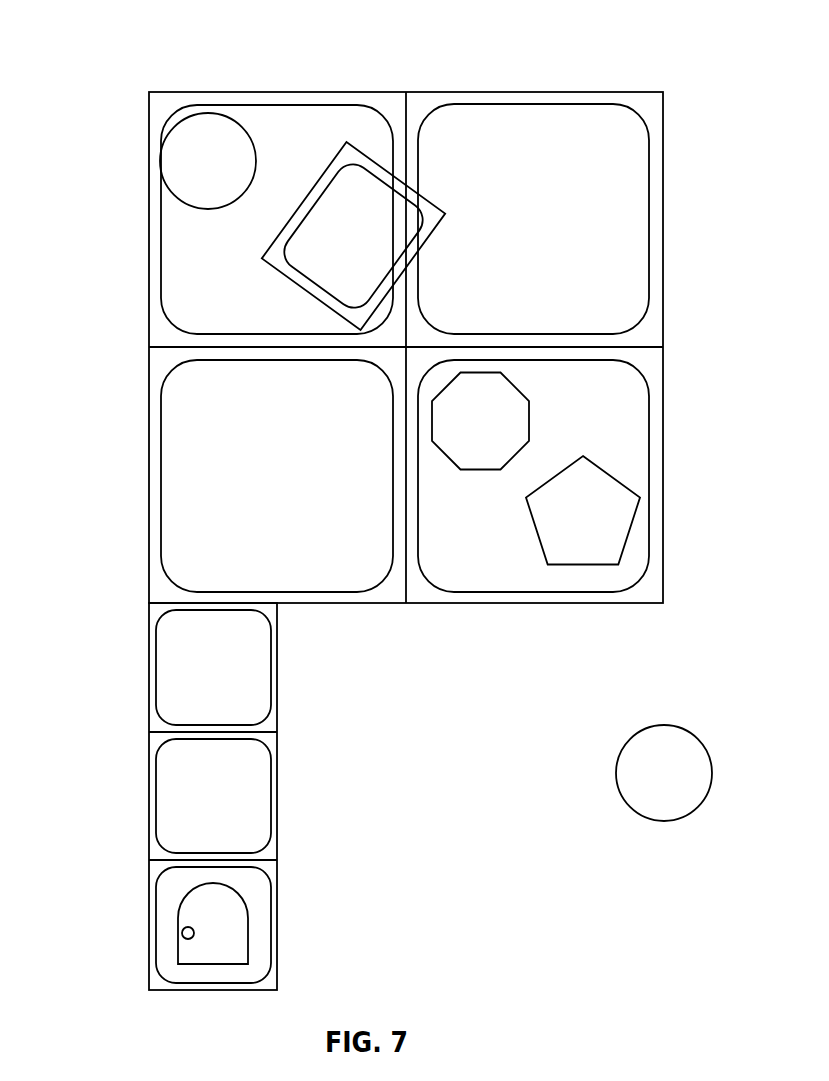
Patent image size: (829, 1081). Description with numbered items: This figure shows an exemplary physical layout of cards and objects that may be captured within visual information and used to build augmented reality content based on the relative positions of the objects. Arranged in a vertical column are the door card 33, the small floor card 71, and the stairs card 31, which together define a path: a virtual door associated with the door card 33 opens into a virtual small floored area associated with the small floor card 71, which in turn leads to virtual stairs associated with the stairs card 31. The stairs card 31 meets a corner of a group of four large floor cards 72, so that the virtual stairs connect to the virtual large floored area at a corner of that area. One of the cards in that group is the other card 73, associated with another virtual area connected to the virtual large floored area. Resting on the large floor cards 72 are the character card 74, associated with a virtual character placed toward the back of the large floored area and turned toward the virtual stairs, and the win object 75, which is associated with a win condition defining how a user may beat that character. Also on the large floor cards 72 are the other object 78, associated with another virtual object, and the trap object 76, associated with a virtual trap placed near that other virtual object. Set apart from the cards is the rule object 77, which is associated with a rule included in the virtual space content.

The large floor cards 72 is at (507, 92).
The other card 73 is at (663, 383).
The character card 74 is at (261, 257).
The win object 75 is at (160, 155).
The trap object 76 is at (529, 416).
The other object 78 is at (630, 529).
The stairs card 31 is at (277, 669).
The small floor card 71 is at (277, 785).
The door card 33 is at (277, 907).
The rule object 77 is at (628, 808).